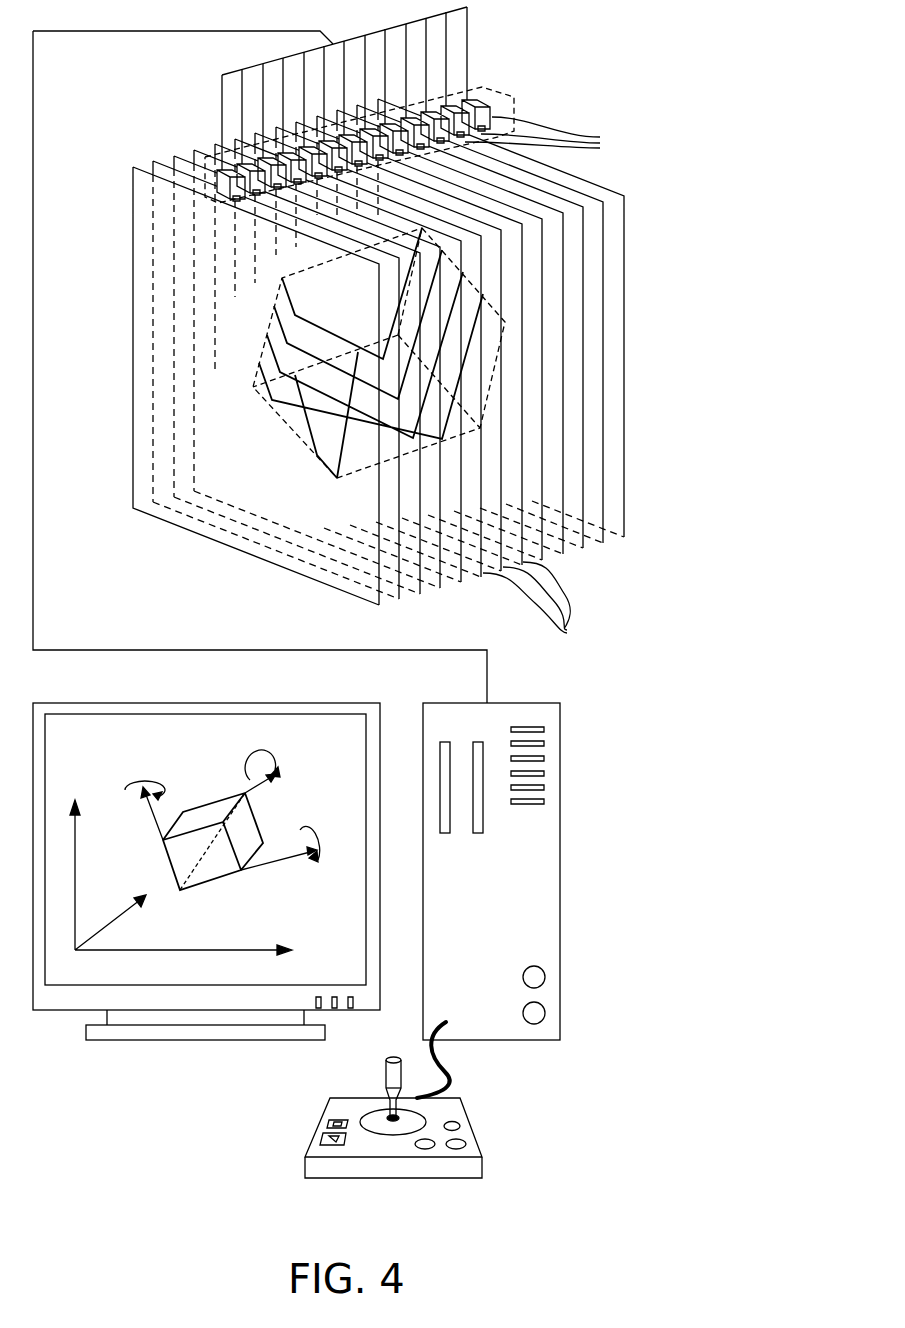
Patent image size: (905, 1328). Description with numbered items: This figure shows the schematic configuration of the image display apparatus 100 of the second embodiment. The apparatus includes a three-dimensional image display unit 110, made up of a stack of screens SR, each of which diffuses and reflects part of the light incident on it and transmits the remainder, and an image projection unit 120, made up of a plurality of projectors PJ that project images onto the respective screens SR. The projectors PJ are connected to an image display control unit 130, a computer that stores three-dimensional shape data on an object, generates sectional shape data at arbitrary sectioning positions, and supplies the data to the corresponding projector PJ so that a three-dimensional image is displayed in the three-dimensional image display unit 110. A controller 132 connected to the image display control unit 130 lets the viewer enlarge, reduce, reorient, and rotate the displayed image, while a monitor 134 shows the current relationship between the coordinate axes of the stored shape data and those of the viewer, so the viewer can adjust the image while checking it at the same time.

The image display apparatus 100 is at (650, 62).
The three-dimensional image display unit 110 is at (653, 187).
The image projection unit 120 is at (503, 92).
The image display control unit 130 is at (560, 860).
The controller 132 is at (472, 1123).
The monitor 134 is at (192, 1042).
The projector PJ is at (544, 136).
The screen SR is at (541, 604).